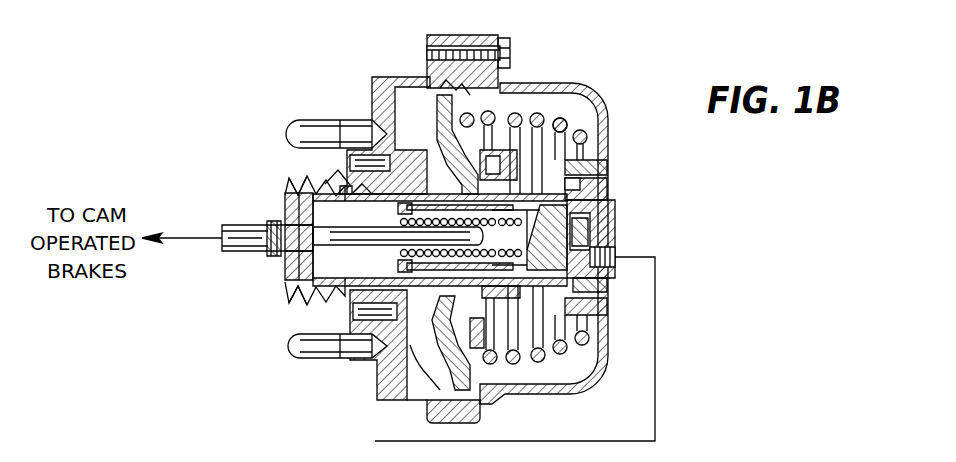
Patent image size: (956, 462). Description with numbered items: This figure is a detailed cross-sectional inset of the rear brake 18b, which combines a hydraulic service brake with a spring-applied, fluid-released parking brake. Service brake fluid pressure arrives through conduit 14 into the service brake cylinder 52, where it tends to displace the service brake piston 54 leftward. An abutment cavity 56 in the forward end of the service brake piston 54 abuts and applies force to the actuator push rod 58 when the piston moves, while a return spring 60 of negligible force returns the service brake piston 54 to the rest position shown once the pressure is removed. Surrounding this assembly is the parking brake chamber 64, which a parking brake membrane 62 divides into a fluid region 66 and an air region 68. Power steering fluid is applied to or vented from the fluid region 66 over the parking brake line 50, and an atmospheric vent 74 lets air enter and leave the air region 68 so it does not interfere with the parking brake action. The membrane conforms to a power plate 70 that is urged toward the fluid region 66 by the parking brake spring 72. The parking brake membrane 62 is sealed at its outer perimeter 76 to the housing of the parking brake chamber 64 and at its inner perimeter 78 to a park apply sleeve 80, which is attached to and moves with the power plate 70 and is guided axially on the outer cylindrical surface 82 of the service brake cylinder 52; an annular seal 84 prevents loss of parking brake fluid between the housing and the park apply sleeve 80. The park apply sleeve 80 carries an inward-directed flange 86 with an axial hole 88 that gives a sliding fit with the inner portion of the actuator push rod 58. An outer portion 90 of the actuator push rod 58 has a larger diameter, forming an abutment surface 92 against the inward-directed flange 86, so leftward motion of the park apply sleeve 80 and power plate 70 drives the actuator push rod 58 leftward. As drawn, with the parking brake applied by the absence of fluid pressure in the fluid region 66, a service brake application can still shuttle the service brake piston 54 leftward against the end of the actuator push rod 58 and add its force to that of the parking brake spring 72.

The conduit 14 is at (580, 441).
The rear brake cylinder 18b is at (288, 312).
The parking brake line 50 is at (350, 83).
The service brake cylinder 52 is at (600, 198).
The service brake piston 54 is at (580, 230).
The abutment cavity 56 is at (536, 226).
The actuator push rod 58 is at (393, 240).
The return spring 60 is at (530, 272).
The parking brake membrane 62 is at (436, 138).
The parking brake chamber 64 is at (553, 80).
The fluid region 66 is at (385, 130).
The air region 68 is at (556, 167).
The power plate 70 is at (473, 103).
The parking brake spring 72 is at (568, 120).
The atmospheric vent 74 is at (605, 175).
The outer perimeter 76 is at (443, 383).
The inner perimeter 78 is at (468, 286).
The park apply sleeve 80 is at (300, 192).
The outer cylindrical surface 82 is at (447, 201).
The annular seal 84 is at (352, 178).
The inward-directed flange 86 is at (318, 214).
The axial hole 88 is at (308, 256).
The outer portion 90 is at (262, 220).
The abutment surface 92 is at (292, 250).